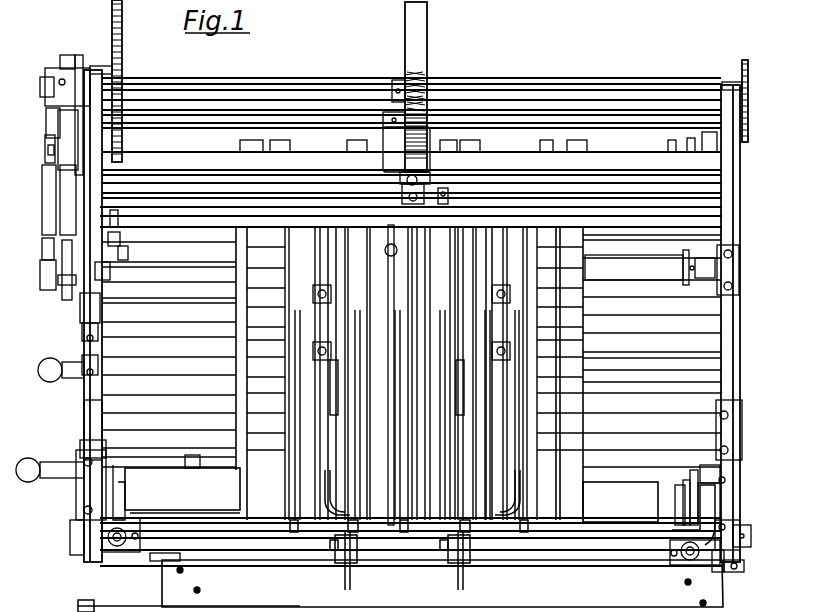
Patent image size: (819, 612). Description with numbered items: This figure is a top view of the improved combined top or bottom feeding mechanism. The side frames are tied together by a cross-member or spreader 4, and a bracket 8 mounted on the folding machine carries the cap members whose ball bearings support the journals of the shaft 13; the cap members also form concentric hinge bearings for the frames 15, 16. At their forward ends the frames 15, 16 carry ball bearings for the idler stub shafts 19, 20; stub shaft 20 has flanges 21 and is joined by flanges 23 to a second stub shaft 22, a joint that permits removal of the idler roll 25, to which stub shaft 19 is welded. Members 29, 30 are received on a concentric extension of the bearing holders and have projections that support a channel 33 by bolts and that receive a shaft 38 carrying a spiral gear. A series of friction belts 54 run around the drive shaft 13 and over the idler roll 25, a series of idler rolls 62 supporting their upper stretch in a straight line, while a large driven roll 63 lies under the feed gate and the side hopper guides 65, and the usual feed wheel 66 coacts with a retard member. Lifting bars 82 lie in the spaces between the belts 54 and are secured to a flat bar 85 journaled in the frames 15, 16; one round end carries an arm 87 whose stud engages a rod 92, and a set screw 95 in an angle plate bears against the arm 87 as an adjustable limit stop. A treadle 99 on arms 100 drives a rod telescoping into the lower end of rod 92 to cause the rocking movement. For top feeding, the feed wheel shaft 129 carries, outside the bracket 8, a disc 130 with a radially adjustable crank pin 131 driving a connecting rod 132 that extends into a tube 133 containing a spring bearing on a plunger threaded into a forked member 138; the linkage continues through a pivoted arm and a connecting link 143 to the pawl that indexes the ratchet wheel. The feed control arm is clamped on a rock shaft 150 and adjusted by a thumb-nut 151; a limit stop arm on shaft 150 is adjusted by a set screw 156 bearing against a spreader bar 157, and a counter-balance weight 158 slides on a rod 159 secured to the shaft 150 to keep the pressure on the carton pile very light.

The cross-member or spreader 4 is at (377, 200).
The bracket 8 is at (98, 68).
The shaft 13 is at (598, 168).
The frame 15 is at (84, 418).
The frame 16 is at (740, 440).
The idler stub shaft 19 is at (120, 480).
The idler stub shaft 20 is at (700, 502).
The flanges 21 is at (692, 482).
The second stub shaft 22 is at (660, 500).
The flanges 23 is at (676, 485).
The idler roll 25 is at (182, 484).
The member 29 is at (80, 526).
The member 30 is at (710, 532).
The channel 33 is at (596, 553).
The shaft 38 is at (110, 548).
The friction belts 54 is at (355, 146).
The idler rolls 62 is at (640, 305).
The large driven roll 63 is at (600, 262).
The side hopper guides 65 is at (330, 253).
The feed wheel 66 is at (428, 42).
The lifting bars 82 is at (365, 492).
The flat bar 85 is at (175, 525).
The arm 87 is at (752, 550).
The rod 92 is at (746, 567).
The set screw 95 is at (720, 565).
The treadle 99 is at (163, 582).
The arms 100 is at (702, 478).
The feed wheel shaft 129 is at (530, 90).
The disc 130 is at (65, 55).
The crank pin 131 is at (42, 78).
The connecting rod 132 is at (52, 140).
The tube 133 is at (46, 176).
The forked member 138 is at (44, 288).
The connecting link 143 is at (68, 285).
The rock shaft 150 is at (140, 220).
The thumb-nut 151 is at (385, 262).
The set screw 156 is at (118, 238).
The spreader bar 157 is at (148, 182).
The weight 158 is at (100, 308).
The rod 159 is at (108, 271).